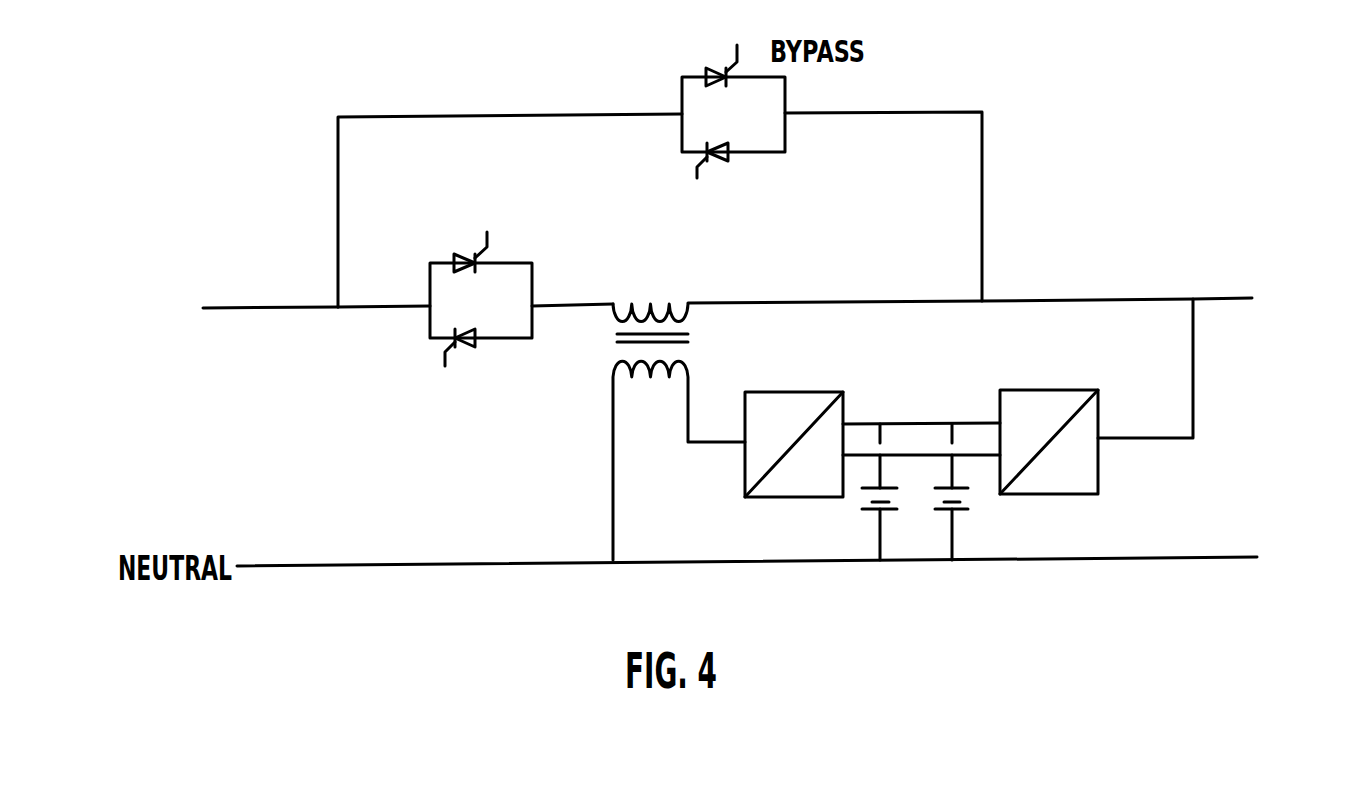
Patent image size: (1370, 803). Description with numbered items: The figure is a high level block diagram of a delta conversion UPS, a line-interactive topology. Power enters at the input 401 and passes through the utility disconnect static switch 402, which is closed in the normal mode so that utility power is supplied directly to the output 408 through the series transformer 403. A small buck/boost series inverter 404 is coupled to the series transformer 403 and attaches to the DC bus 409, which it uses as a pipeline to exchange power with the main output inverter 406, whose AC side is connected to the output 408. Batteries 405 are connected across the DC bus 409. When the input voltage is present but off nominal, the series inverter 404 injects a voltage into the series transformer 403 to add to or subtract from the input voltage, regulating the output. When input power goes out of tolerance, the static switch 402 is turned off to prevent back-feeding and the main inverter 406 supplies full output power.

The input terminal 401 is at (206, 272).
The utility disconnect static switch 402 is at (467, 273).
The series transformer 403 is at (679, 432).
The series inverter 404 is at (759, 457).
The batteries 405 is at (915, 492).
The output inverter 406 is at (1015, 428).
The output 408 is at (1225, 322).
The DC bus 409 is at (921, 424).